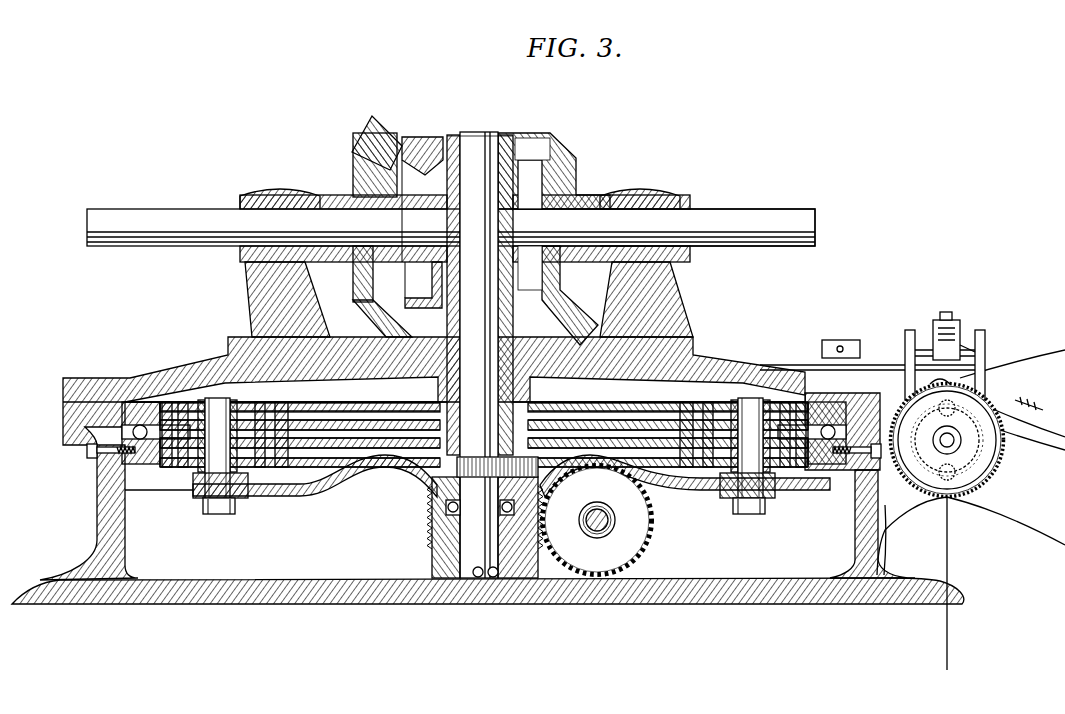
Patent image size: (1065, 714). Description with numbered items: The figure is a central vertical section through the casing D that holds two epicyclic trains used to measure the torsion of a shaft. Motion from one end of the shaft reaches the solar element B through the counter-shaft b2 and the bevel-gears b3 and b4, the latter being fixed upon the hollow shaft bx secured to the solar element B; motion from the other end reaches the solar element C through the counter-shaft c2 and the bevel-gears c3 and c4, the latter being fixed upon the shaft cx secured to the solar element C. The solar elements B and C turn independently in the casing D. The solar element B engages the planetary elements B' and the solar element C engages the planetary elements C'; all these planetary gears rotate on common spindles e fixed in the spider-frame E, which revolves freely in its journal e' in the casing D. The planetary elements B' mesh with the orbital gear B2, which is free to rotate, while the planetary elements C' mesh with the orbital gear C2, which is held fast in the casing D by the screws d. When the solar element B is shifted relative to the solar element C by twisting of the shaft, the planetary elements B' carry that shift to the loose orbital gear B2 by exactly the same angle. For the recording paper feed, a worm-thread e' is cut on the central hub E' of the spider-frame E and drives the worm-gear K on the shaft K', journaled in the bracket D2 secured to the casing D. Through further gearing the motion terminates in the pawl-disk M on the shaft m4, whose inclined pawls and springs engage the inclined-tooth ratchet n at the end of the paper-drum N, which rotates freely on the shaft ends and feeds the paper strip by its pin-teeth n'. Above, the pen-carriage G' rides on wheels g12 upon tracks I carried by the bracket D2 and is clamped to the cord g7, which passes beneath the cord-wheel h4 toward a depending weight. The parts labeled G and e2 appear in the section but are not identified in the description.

The casing D is at (95, 515).
The bracket D2 is at (900, 534).
The orbital gear B2 is at (142, 400).
The planetary elements B' is at (481, 390).
The solar element B is at (299, 391).
The counter-shaft b2 is at (176, 218).
The counter-shaft c2 is at (761, 218).
The bevel-gear b3 is at (361, 167).
The bevel-gear b4 is at (418, 308).
The hollow shaft bx is at (447, 236).
The bevel-gear c3 is at (570, 184).
The bevel-gear c4 is at (533, 145).
The shaft cx is at (480, 355).
The orbital gear C2 is at (160, 465).
The planetary elements C' is at (482, 473).
The solar element C is at (298, 471).
The spindles e is at (483, 433).
The screws d is at (87, 452).
The spider-frame E is at (477, 491).
The central hub E' is at (469, 517).
The worm-thread e' is at (422, 549).
The worm-gear K is at (597, 520).
The shaft K' is at (597, 537).
The gear hub e2 is at (582, 520).
The cord-wheel h4 is at (866, 350).
The tracks I is at (905, 370).
The pen-carriage G' is at (945, 351).
The wheels g12 is at (962, 335).
The cord g7 is at (949, 642).
The belt G is at (1030, 409).
The paper-drum N is at (980, 490).
The ratchet n is at (969, 440).
The pin-teeth n' is at (975, 447).
The shaft m4 is at (942, 440).
The pawl-disk M is at (1055, 440).